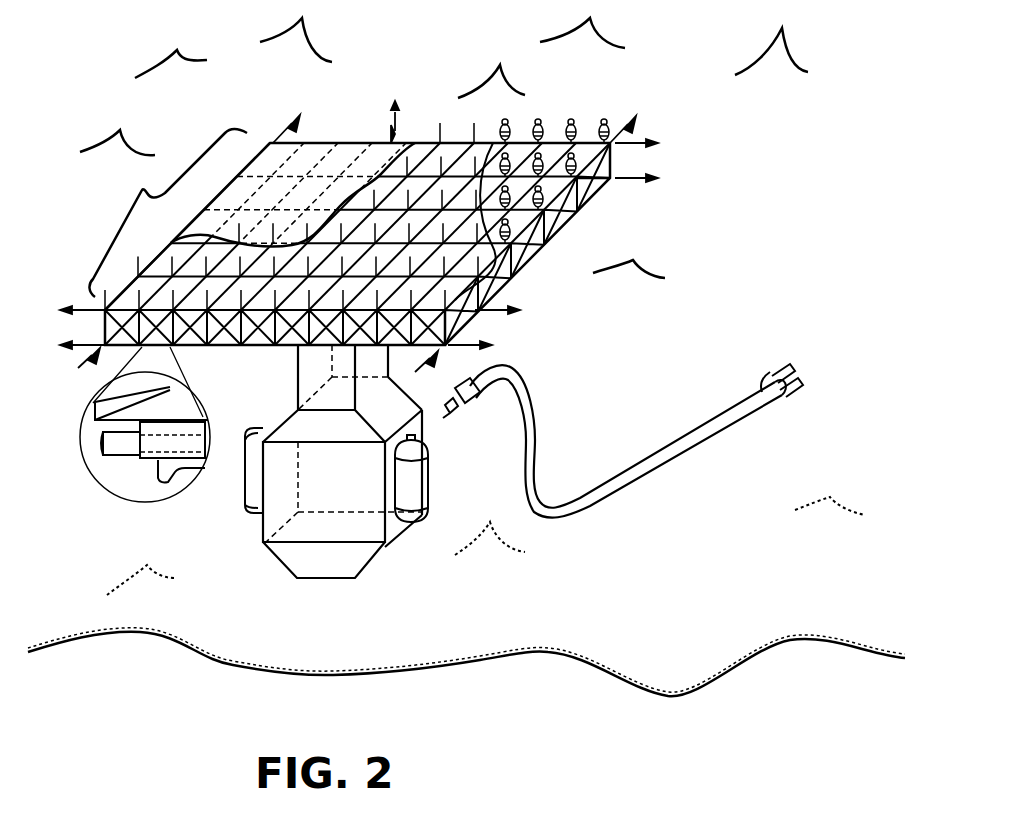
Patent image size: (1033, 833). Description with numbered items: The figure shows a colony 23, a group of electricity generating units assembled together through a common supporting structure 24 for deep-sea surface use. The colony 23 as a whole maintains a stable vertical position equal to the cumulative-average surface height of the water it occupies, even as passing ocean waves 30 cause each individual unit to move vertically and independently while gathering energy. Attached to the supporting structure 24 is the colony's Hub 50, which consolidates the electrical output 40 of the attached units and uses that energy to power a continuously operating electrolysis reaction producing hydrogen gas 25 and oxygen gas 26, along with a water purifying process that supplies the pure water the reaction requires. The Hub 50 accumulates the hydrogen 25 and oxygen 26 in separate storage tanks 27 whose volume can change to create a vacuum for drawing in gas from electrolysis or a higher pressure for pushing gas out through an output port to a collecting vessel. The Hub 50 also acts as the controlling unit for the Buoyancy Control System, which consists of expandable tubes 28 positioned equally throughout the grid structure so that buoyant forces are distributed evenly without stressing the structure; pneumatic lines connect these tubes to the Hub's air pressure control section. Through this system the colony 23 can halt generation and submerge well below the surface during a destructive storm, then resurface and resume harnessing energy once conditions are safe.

The colony 23 is at (142, 192).
The supporting structure 24 is at (580, 203).
The hydrogen gas 25 is at (790, 368).
The oxygen gas 26 is at (802, 379).
The storage tanks 27 is at (428, 490).
The expandable tubes 28 is at (142, 458).
The ocean waves 30 is at (157, 68).
The electrical output 40 is at (708, 415).
The Hub 50 is at (263, 527).